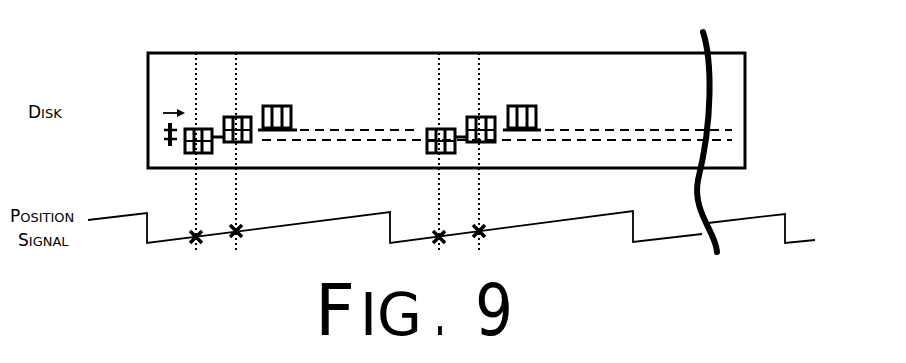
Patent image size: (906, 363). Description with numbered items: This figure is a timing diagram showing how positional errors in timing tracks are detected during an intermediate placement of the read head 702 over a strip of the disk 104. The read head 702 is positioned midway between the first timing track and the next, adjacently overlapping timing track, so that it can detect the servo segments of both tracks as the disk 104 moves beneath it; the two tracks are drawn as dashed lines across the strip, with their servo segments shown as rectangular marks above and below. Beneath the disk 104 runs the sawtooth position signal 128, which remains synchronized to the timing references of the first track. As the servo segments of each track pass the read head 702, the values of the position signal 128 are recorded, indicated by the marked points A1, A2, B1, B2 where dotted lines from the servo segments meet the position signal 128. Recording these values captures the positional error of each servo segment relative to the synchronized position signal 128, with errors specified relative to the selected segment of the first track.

The disk 104 is at (148, 85).
The read head 702 is at (168, 143).
The position signal 128 is at (105, 217).
The first position sample point A1 is at (196, 244).
The second position sample point A2 is at (236, 241).
The first position sample point B1 is at (439, 244).
The second position sample point B2 is at (479, 241).